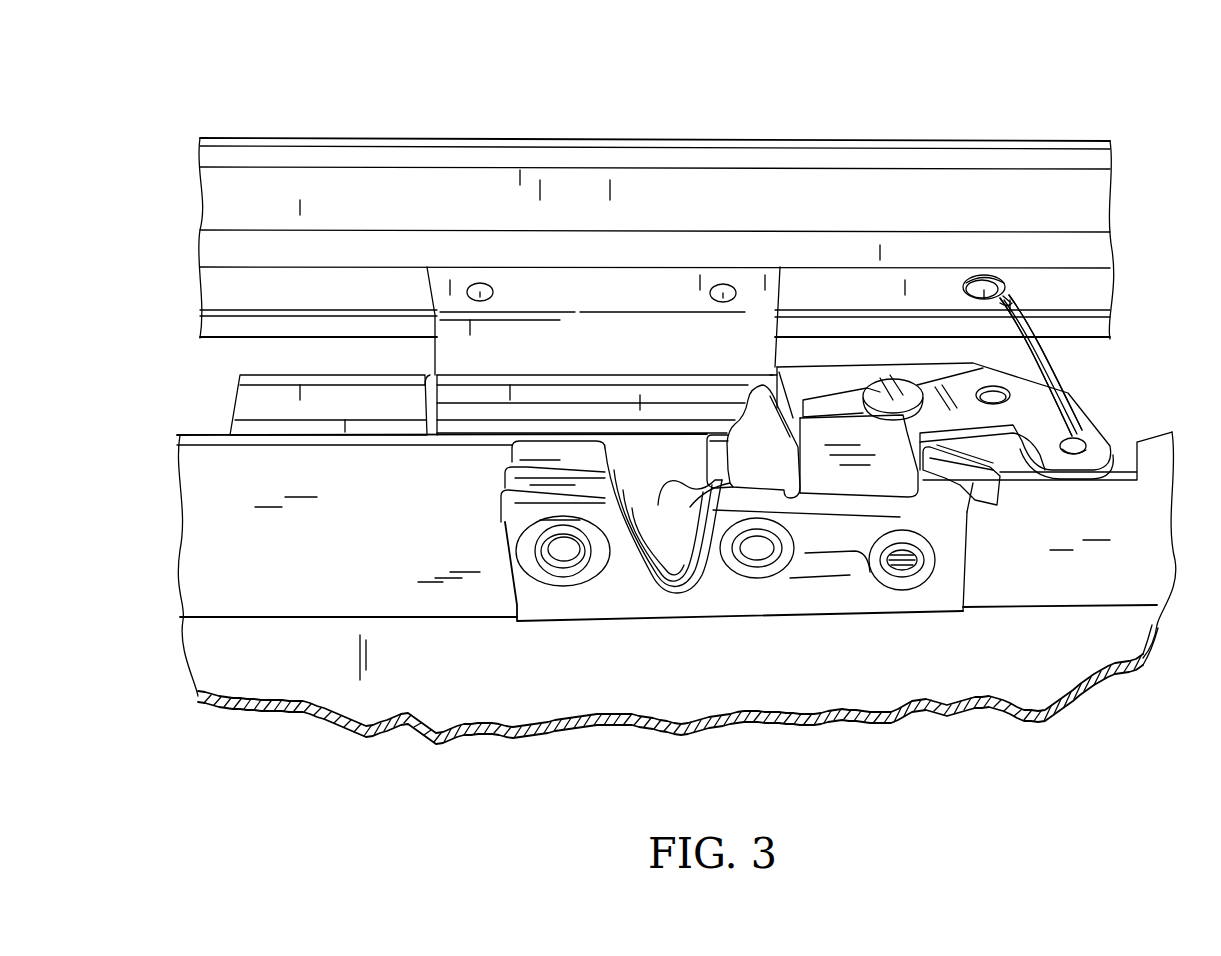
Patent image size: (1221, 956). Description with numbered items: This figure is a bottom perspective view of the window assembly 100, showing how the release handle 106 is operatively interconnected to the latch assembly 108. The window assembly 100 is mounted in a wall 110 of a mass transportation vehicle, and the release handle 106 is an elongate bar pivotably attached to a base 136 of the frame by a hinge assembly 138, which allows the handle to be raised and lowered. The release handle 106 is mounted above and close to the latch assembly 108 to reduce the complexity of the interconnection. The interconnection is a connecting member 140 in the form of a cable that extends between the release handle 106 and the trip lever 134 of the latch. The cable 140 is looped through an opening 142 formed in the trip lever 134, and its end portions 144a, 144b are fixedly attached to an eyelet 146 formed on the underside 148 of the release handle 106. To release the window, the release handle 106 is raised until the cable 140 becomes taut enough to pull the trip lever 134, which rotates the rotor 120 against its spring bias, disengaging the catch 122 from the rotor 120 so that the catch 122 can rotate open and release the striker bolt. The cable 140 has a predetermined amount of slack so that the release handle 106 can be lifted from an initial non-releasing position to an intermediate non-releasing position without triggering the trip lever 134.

The window assembly 100 is at (488, 82).
The release handle 106 is at (760, 185).
The latch assembly 108 is at (590, 605).
The wall 110 is at (237, 678).
The rotor 120 is at (980, 487).
The catch 122 is at (673, 503).
The trip lever 134 is at (1072, 410).
The base 136 is at (212, 466).
The hinge assembly 138 is at (465, 353).
The connecting member 140 is at (1055, 360).
The opening 142 is at (1076, 442).
The end portion 144a is at (1012, 290).
The end portion 144b is at (1040, 367).
The eyelet 146 is at (969, 277).
The underside 148 is at (1104, 196).